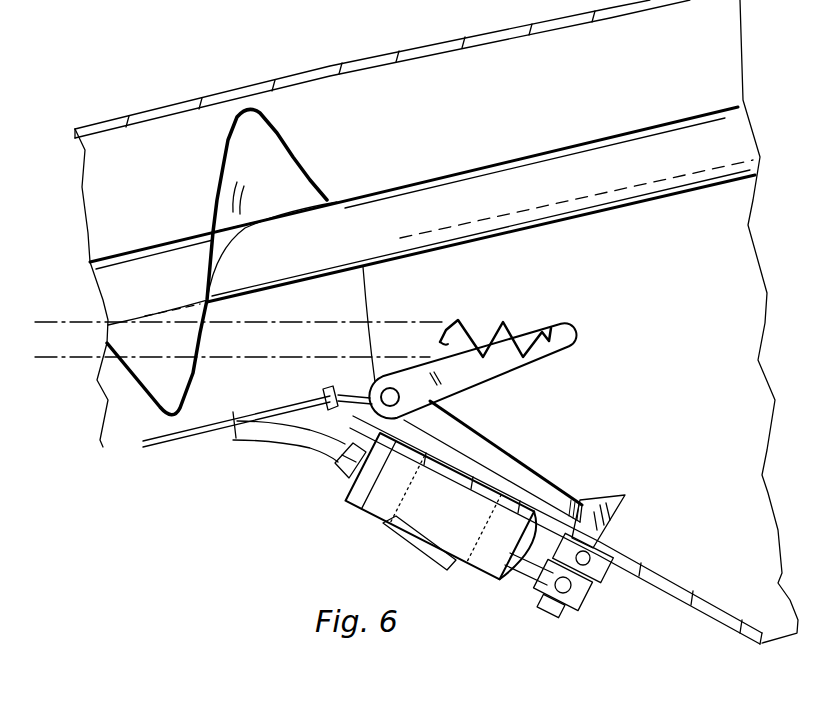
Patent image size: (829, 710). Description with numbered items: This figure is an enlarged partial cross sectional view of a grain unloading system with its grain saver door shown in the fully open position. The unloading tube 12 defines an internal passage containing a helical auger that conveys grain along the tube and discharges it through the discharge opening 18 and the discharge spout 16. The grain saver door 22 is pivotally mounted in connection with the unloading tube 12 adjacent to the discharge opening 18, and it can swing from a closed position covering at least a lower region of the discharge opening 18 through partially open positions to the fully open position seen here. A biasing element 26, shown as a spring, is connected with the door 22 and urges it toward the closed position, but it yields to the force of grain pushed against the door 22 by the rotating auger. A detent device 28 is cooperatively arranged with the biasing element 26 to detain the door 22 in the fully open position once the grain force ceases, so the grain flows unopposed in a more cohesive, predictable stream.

The unloading tube 12 is at (175, 450).
The discharge spout 16 is at (697, 618).
The discharge opening 18 is at (716, 478).
The grain saver door 22 is at (498, 436).
The biasing element 26 is at (477, 328).
The detent device 28 is at (364, 523).